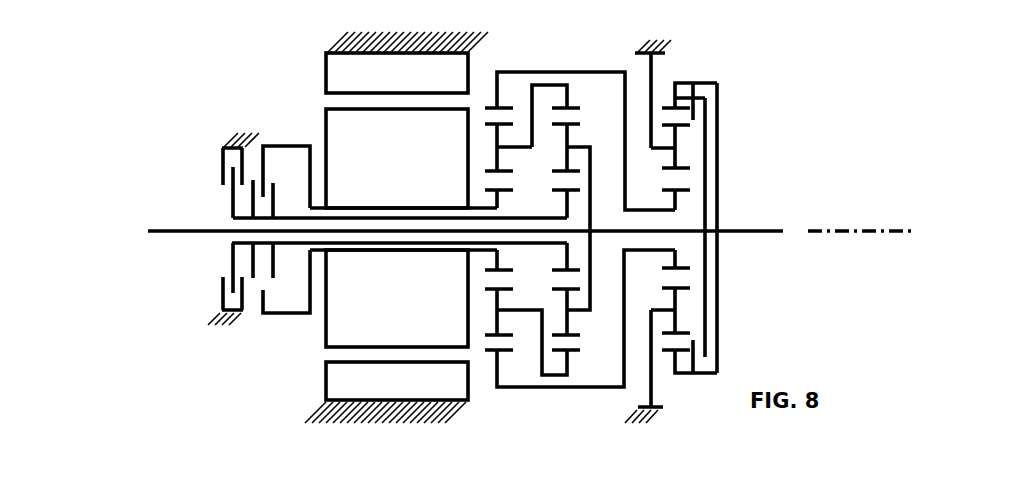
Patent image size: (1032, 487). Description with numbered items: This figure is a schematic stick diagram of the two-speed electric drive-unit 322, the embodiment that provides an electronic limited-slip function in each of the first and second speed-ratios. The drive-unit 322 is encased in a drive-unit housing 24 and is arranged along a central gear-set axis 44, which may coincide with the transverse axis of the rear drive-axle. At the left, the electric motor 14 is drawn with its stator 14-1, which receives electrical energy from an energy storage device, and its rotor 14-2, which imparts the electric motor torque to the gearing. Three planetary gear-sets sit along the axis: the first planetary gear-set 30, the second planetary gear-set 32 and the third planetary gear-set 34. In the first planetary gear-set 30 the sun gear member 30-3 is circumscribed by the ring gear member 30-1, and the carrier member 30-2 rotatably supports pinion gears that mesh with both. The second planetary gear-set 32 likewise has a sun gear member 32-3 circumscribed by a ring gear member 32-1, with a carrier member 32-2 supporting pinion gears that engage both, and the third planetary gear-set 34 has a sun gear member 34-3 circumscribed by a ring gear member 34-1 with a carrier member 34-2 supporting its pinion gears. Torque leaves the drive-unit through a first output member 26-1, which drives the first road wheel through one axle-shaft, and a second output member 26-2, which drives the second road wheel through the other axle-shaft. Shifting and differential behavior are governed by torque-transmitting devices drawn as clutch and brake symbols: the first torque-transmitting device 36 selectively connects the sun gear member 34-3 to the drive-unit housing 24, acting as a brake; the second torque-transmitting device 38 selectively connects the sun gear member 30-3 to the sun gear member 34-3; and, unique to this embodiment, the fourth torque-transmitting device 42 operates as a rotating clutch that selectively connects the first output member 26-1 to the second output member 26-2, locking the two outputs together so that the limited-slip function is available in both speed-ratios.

The drive-unit 322 is at (176, 94).
The electric motor 14 is at (472, 65).
The stator 14-1 is at (418, 85).
The rotor 14-2 is at (418, 170).
The drive-unit housing 24 is at (228, 313).
The first output member 26-1 is at (753, 231).
The second output member 26-2 is at (173, 228).
The first planetary gear-set 30 is at (487, 152).
The ring gear member 30-1 is at (491, 355).
The carrier member 30-2 is at (520, 312).
The sun gear member 30-3 is at (493, 268).
The second planetary gear-set 32 is at (690, 153).
The ring gear member 32-1 is at (692, 98).
The carrier member 32-2 is at (644, 64).
The sun gear member 32-3 is at (683, 272).
The third planetary gear-set 34 is at (598, 206).
The ring gear member 34-1 is at (568, 102).
The carrier member 34-2 is at (592, 292).
The sun gear member 34-3 is at (570, 276).
The first torque-transmitting device 36 is at (222, 297).
The second torque-transmitting device 38 is at (273, 186).
The fourth torque-transmitting device 42 is at (703, 84).
The central gear-set axis 44 is at (855, 228).